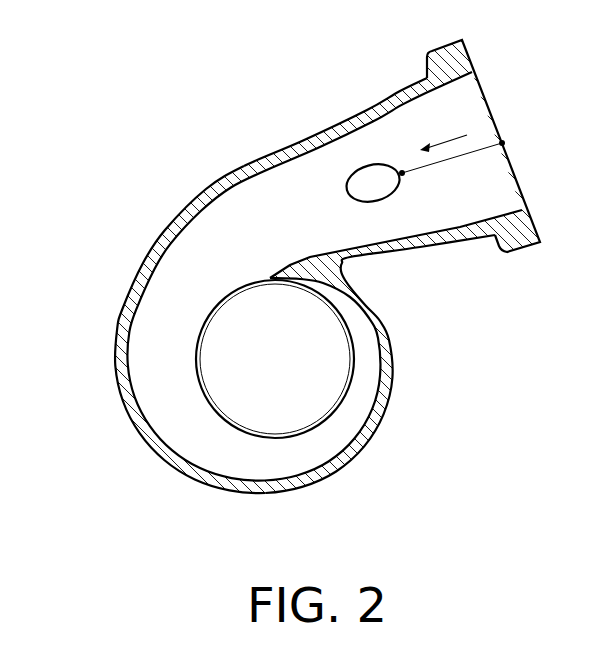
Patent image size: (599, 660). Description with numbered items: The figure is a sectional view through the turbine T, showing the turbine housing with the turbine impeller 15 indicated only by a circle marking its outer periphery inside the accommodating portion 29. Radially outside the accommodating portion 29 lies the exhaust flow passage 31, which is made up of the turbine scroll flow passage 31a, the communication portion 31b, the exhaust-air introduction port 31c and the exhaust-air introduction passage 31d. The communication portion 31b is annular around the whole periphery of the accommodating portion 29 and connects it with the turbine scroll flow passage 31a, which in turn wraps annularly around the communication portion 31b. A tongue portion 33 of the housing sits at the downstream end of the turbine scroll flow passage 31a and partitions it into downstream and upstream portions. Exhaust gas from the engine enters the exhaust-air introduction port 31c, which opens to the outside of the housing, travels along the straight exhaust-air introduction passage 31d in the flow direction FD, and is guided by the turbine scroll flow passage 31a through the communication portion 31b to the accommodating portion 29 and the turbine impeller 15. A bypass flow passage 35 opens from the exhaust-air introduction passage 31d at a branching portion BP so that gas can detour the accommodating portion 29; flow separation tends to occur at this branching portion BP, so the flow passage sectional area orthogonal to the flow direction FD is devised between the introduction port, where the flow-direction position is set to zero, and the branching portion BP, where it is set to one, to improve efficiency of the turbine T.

The turbine T is at (295, 259).
The exhaust flow passage 31 is at (289, 269).
The turbine scroll flow passage 31a is at (173, 403).
The communication portion 31b is at (323, 423).
The exhaust-air introduction port 31c is at (489, 111).
The exhaust-air introduction passage 31d is at (302, 197).
The tongue portion 33 is at (269, 283).
The bypass flow passage 35 is at (340, 122).
The branching portion BP is at (380, 165).
The accommodating portion 29 is at (291, 372).
The turbine impeller 15 is at (331, 359).
The flow direction FD is at (460, 140).